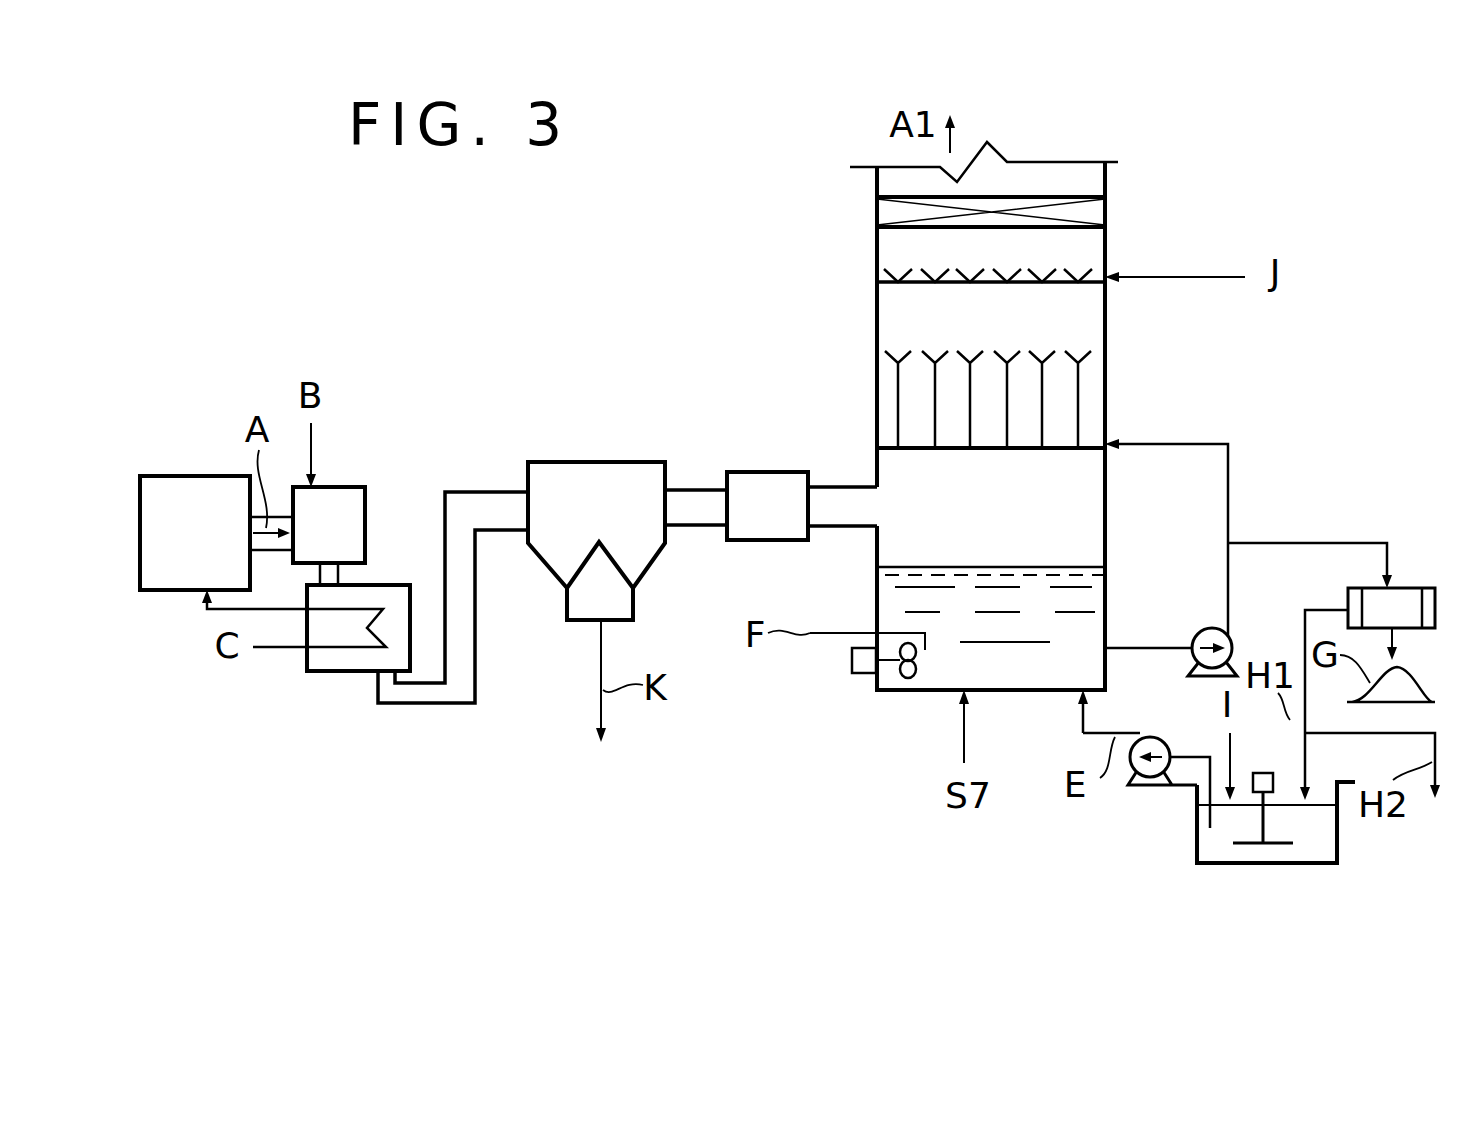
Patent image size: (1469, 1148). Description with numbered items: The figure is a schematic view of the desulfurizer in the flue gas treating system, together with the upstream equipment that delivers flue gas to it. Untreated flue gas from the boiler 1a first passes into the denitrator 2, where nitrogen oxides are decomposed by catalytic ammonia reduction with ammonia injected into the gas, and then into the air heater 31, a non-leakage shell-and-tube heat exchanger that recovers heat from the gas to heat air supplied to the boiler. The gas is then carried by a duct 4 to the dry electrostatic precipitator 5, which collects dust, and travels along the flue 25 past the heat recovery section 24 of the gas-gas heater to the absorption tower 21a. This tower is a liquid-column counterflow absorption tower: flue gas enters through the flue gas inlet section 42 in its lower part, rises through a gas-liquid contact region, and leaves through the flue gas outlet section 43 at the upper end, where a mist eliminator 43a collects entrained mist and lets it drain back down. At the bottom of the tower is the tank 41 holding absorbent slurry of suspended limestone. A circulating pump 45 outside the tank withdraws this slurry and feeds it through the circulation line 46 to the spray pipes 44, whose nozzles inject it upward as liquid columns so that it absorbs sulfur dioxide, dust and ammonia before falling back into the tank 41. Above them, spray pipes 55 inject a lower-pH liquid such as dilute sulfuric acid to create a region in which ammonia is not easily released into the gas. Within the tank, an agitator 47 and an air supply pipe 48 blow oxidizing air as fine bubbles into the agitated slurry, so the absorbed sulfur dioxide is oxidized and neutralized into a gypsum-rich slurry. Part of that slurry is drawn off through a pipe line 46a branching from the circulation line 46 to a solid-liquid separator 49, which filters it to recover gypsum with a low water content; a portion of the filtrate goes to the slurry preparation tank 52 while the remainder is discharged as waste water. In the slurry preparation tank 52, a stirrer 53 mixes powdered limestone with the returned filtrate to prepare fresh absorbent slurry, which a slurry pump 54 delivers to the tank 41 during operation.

The boiler 1a is at (188, 476).
The denitrator 2 is at (365, 500).
The air heater 31 is at (333, 672).
The flue gas duct 4 is at (422, 703).
The dry electrostatic precipitator 5 is at (583, 462).
The flue 25 is at (698, 490).
The heat recovery section 24 is at (765, 540).
The flue gas inlet section 42 is at (838, 487).
The tank 41 is at (1053, 690).
The flue gas outlet section 43 is at (1105, 178).
The mist eliminator 43a is at (1027, 228).
The spray pipes 55 is at (1057, 282).
The absorption tower 21a is at (1105, 393).
The spray pipes 44 is at (1057, 448).
The circulation line 46 is at (1228, 472).
The circulating pump 45 is at (1207, 627).
The pipe line 46a is at (1363, 543).
The solid-liquid separator 49 is at (1348, 587).
The agitator 47 is at (855, 675).
The air supply pipe 48 is at (928, 655).
The slurry pump 54 is at (1150, 785).
The slurry preparation tank 52 is at (1318, 863).
The stirrer 53 is at (1242, 843).